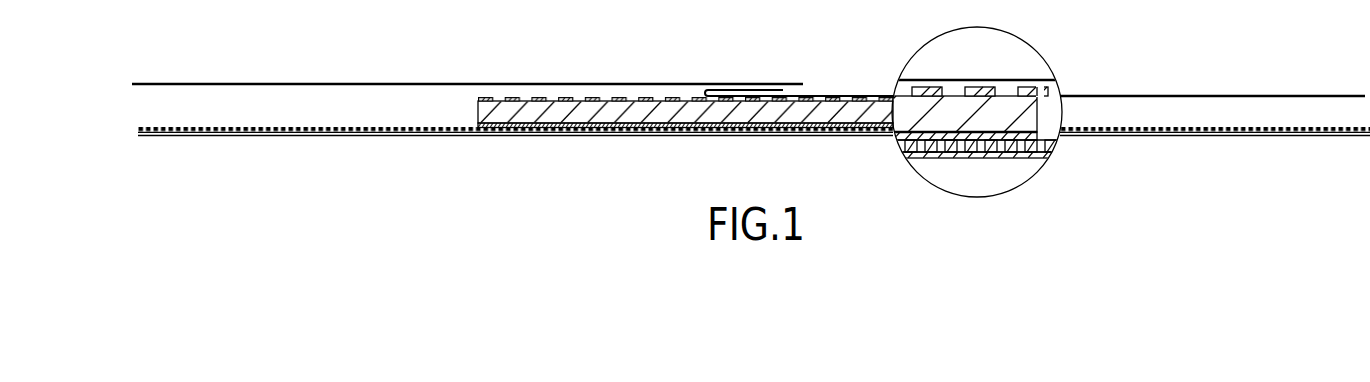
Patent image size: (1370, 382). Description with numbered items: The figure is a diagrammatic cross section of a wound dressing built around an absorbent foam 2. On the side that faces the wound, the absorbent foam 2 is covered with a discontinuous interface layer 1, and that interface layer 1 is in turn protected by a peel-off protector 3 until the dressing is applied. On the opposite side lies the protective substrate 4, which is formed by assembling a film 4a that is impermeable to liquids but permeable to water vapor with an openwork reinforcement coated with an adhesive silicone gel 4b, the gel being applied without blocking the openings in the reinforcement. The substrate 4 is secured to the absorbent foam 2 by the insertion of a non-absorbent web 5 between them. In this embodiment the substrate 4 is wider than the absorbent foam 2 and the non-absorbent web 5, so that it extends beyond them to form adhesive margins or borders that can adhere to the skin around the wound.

The discontinuous interface layer 1 is at (562, 100).
The absorbent foam 2 is at (953, 104).
The peel-off protector 3 is at (790, 88).
The substrate 4 is at (124, 131).
The film 4a is at (322, 135).
The adhesive silicone gel 4b is at (432, 128).
The non-absorbent web 5 is at (612, 128).